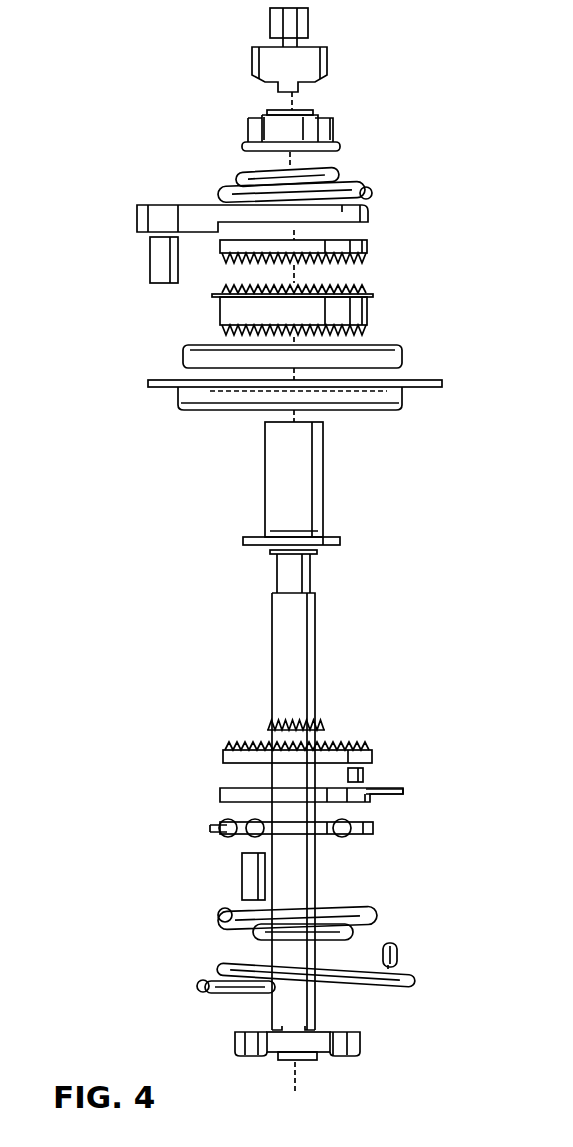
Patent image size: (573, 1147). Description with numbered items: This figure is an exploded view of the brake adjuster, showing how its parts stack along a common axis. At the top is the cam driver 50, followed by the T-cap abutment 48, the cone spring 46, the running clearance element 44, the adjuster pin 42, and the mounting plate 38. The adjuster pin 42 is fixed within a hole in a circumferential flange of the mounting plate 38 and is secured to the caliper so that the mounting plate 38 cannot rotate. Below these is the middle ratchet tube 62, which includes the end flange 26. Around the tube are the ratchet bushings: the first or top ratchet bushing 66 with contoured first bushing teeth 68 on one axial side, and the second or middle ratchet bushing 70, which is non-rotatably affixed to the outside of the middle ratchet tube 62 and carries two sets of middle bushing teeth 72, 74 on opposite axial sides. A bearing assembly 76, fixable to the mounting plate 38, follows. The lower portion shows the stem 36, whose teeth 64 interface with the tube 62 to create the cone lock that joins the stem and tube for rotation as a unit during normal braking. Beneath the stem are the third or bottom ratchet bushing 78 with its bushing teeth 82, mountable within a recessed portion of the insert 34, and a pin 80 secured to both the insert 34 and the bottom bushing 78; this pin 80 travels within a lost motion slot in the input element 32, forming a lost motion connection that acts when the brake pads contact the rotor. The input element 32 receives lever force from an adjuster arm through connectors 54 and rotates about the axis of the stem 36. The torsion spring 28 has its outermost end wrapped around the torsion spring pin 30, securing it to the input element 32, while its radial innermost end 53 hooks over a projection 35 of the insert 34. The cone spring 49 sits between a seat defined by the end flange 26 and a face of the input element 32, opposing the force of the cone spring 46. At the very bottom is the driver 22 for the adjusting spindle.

The driver 22 is at (362, 1037).
The end flange 26 is at (340, 537).
The torsion spring 28 is at (217, 970).
The torsion spring pin 30 is at (240, 877).
The input element 32 is at (375, 828).
The insert 34 is at (220, 793).
The projection 35 is at (403, 792).
The stem 36 is at (315, 663).
The mounting plate 38 is at (198, 412).
The adjuster pin 42 is at (150, 262).
The running clearance element 44 is at (193, 205).
The cone spring 46 is at (357, 180).
The T-cap abutment 48 is at (335, 140).
The cone spring 49 is at (377, 912).
The cam driver 50 is at (318, 47).
The radial innermost end 53 is at (398, 952).
The connectors 54 is at (228, 840).
The middle ratchet tube 62 is at (323, 473).
The teeth 64 is at (323, 723).
The first ratchet bushing 66 is at (323, 252).
The first bushing teeth 68 is at (352, 262).
The second ratchet bushing 70 is at (287, 317).
The middle bushing teeth 72 is at (350, 283).
The middle bushing teeth 74 is at (240, 333).
The bearing assembly 76 is at (402, 353).
The third ratchet bushing 78 is at (308, 734).
The pin 80 is at (363, 775).
The bushing teeth 82 is at (230, 743).